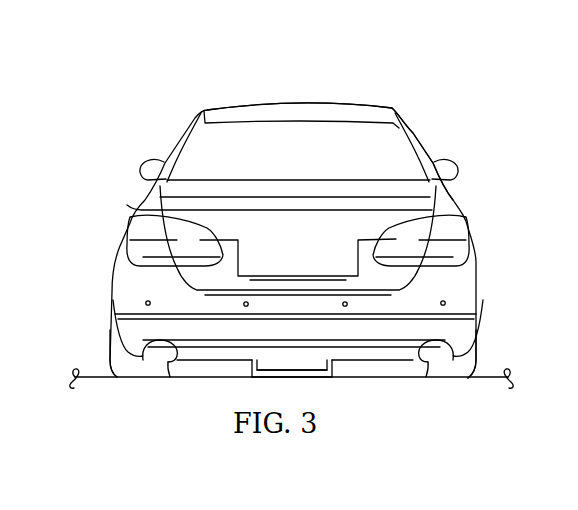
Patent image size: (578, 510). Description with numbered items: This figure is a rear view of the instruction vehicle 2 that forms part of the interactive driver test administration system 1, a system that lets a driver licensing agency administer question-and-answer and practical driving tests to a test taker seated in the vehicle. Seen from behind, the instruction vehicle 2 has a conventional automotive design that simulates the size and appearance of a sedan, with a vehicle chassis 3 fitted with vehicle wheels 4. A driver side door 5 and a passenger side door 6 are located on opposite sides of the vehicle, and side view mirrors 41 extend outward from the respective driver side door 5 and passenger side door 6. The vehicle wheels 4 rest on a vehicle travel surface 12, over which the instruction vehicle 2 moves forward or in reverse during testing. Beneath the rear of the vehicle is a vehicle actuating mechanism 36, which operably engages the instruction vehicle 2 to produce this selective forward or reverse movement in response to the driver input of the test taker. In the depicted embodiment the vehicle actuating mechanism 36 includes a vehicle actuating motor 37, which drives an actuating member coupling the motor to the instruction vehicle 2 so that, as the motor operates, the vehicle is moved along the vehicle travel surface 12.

The interactive driver test administration system 1 is at (161, 57).
The instruction vehicle 2 is at (336, 104).
The vehicle chassis 3 is at (458, 278).
The vehicle wheels 4 is at (140, 356).
The driver side door 5 is at (180, 134).
The passenger side door 6 is at (427, 146).
The side view mirrors 41 is at (144, 168).
The vehicle travel surface 12 is at (197, 377).
The vehicle actuating mechanism 36 is at (241, 367).
The vehicle actuating motor 37 is at (312, 379).